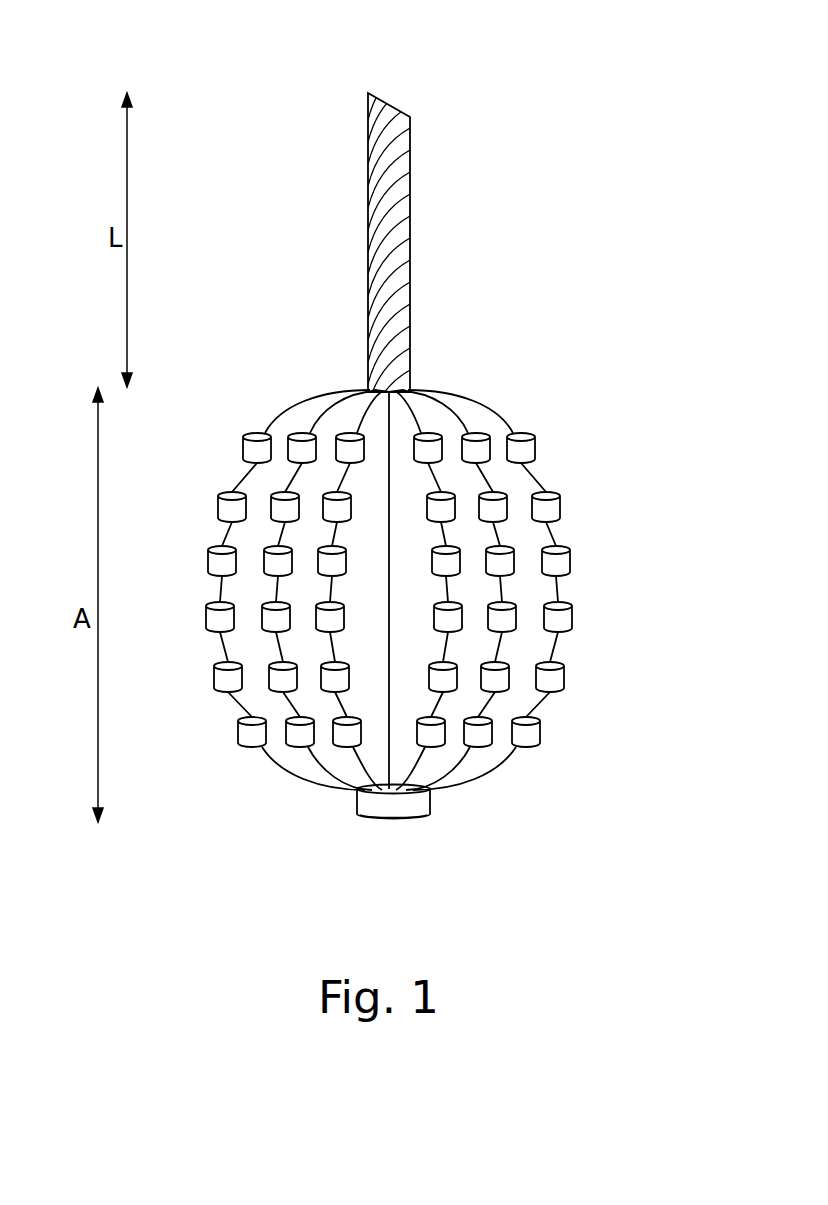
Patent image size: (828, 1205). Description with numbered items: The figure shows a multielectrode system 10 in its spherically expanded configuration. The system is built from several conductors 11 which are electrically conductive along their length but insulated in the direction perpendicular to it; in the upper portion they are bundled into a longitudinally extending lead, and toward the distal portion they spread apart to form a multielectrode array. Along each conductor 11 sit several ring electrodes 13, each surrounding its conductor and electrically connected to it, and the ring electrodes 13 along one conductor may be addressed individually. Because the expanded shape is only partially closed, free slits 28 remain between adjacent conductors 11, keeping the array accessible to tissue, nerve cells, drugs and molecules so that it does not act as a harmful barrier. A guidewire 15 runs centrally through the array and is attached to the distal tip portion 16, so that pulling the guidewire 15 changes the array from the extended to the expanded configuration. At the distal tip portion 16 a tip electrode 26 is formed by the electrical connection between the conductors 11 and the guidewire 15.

The multielectrode system 10 is at (580, 189).
The conductors 11 is at (392, 117).
The ring electrodes 13 is at (565, 557).
The guidewire 15 is at (400, 423).
The distal tip portion 16 is at (422, 802).
The tip electrode 26 is at (385, 821).
The slits 28 is at (253, 478).